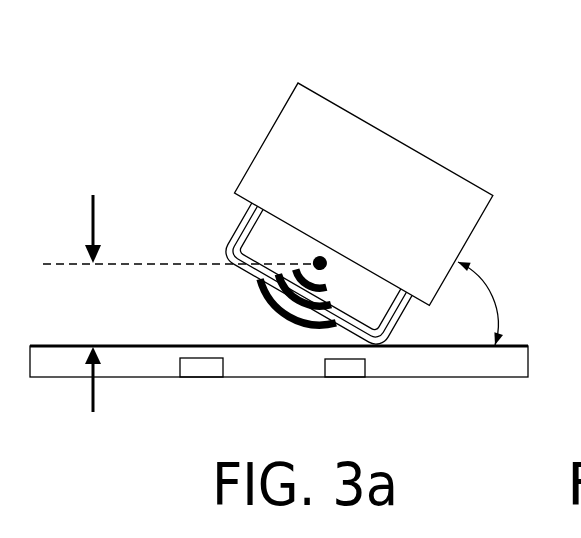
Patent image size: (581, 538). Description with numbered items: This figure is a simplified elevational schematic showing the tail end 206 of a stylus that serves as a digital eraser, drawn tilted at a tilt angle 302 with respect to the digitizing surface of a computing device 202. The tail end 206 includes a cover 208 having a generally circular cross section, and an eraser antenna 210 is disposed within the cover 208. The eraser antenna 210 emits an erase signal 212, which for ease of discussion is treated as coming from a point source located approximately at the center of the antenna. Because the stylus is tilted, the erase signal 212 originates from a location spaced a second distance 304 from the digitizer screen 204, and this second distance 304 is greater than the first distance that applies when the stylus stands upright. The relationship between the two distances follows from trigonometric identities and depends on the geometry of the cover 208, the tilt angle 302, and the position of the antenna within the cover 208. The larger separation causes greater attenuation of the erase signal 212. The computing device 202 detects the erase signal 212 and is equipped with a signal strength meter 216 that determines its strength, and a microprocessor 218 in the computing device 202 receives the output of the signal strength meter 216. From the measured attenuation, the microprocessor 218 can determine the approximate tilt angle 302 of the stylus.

The computing device 202 is at (454, 367).
The digitizer screen 204 is at (503, 345).
The tail end 206 is at (383, 113).
The cover 208 is at (228, 245).
The eraser antenna 210 is at (272, 245).
The erase signal 212 is at (281, 316).
The signal strength meter 216 is at (350, 370).
The microprocessor 218 is at (203, 368).
The angle θ 302 is at (477, 282).
The distance d2 304 is at (107, 313).